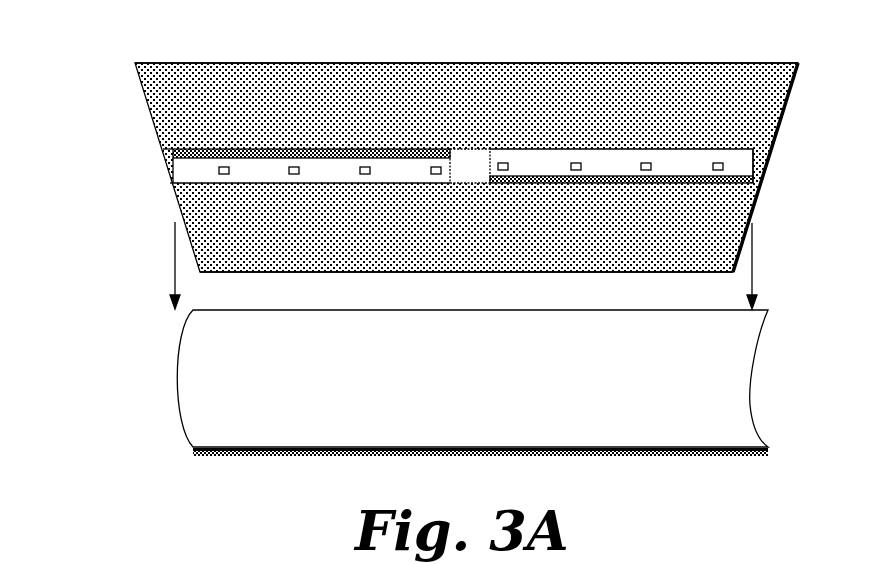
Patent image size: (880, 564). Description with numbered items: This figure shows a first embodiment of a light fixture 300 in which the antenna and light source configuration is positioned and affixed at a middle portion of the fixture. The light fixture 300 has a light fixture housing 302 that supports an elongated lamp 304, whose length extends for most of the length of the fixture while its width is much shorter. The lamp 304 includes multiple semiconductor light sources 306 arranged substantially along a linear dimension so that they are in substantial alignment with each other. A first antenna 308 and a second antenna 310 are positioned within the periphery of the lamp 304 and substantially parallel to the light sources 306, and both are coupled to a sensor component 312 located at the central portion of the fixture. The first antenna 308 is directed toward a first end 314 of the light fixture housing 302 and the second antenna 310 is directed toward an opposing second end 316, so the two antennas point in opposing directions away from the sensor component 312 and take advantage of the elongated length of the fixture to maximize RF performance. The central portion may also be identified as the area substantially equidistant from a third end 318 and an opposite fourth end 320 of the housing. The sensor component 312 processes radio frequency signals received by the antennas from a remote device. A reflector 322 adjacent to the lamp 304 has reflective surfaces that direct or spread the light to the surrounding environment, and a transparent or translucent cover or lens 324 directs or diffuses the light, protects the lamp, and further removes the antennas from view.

The light fixture 300 is at (130, 46).
The light fixture housing 302 is at (165, 105).
The lamp 304 is at (175, 170).
The semiconductor light sources 306 is at (224, 175).
The first antenna 308 is at (338, 160).
The second antenna 310 is at (603, 180).
The sensor component 312 is at (470, 172).
The first end 314 is at (172, 184).
The second end 316 is at (758, 166).
The third end 318 is at (343, 63).
The fourth end 320 is at (585, 268).
The reflector 322 is at (465, 85).
The cover or lens 324 is at (175, 378).